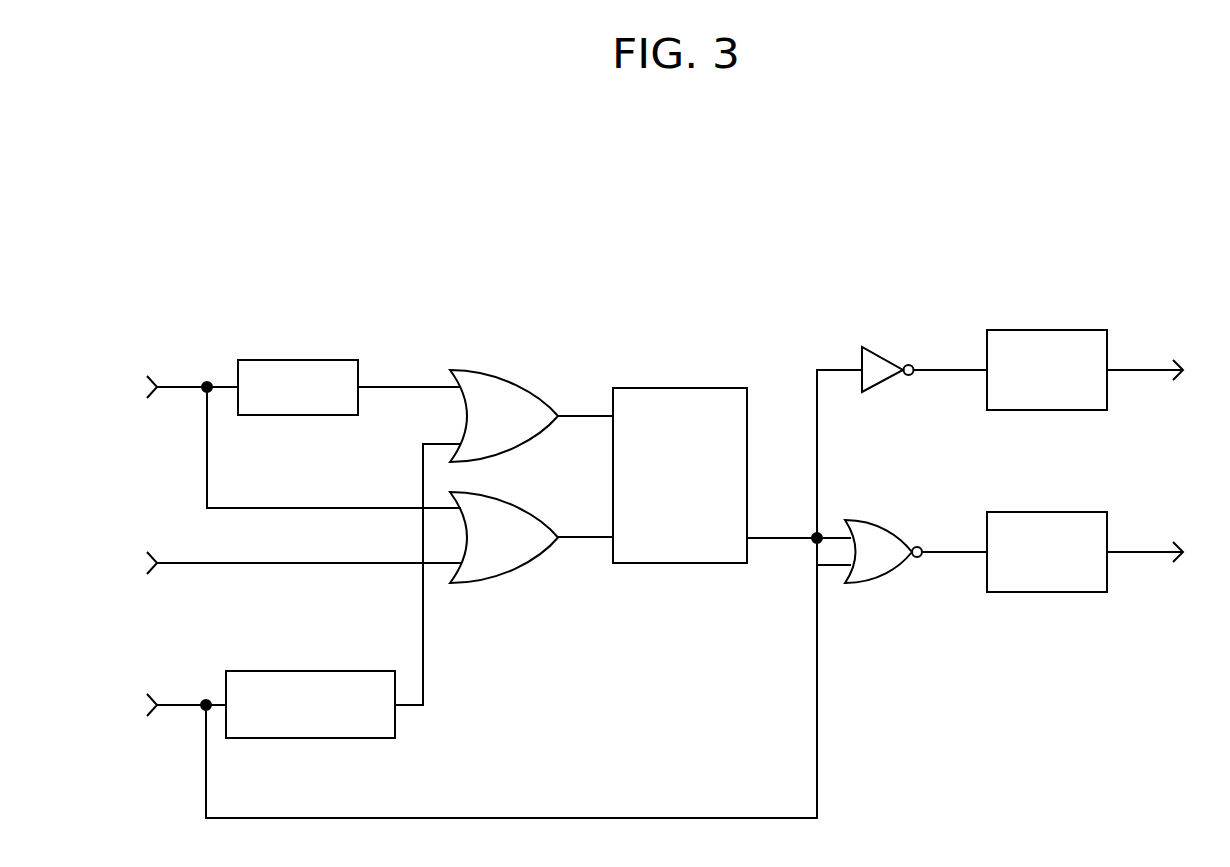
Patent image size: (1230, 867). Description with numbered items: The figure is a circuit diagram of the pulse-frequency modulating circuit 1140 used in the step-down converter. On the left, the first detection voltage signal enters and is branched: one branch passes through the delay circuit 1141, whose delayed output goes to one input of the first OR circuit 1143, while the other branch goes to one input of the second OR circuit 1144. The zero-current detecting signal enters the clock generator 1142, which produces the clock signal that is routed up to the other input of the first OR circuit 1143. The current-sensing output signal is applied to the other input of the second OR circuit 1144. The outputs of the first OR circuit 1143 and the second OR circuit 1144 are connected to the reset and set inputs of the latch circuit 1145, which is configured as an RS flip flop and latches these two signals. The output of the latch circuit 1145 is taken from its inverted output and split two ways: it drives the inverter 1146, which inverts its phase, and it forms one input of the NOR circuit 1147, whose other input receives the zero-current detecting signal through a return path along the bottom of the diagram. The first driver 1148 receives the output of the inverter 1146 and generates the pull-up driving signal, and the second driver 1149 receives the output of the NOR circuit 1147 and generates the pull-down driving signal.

The pulse-frequency modulating circuit 1140 is at (657, 171).
The delay circuit 1141 is at (331, 360).
The clock generator 1142 is at (331, 671).
The first OR circuit 1143 is at (498, 372).
The second OR circuit 1144 is at (520, 494).
The latch circuit 1145 is at (706, 388).
The inverter 1146 is at (889, 360).
The NOR circuit 1147 is at (874, 520).
The first driver 1148 is at (1077, 330).
The second driver 1149 is at (1077, 512).